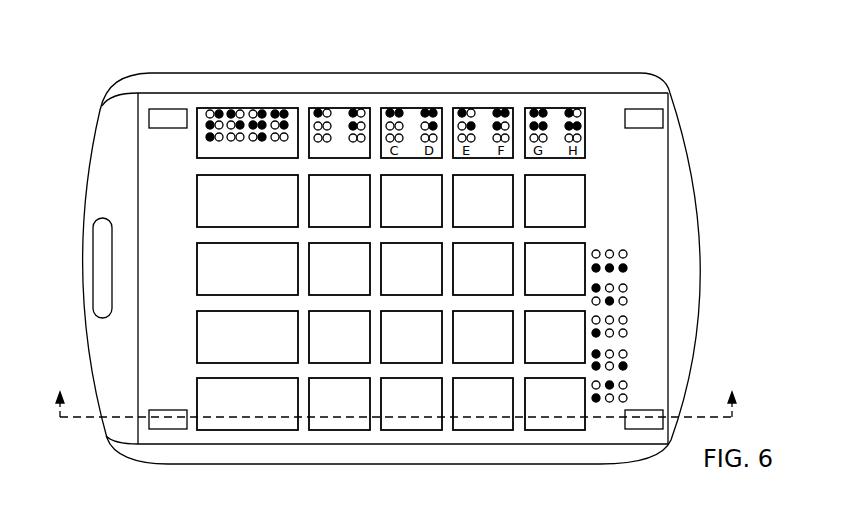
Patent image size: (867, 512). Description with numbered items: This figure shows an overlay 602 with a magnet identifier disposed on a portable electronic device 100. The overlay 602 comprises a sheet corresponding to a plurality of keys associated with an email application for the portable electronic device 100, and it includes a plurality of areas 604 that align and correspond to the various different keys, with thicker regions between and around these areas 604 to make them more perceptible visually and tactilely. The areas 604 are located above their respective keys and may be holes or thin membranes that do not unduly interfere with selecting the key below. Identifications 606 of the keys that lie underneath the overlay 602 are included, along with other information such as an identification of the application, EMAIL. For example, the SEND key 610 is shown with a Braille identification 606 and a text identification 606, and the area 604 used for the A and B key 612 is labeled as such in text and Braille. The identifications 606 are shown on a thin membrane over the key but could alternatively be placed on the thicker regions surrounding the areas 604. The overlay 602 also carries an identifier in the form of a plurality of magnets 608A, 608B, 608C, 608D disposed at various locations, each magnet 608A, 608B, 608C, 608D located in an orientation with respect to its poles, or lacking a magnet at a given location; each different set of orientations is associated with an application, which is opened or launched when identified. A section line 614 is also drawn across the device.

The portable electronic device 100 is at (80, 463).
The overlay 602 is at (455, 100).
The areas 604 is at (250, 421).
The identifications 606 is at (250, 117).
The magnet 608A is at (165, 109).
The magnet 608B is at (643, 110).
The magnet 608C is at (645, 430).
The magnet 608D is at (163, 430).
The SEND key 610 is at (297, 113).
The A and B key 612 is at (368, 113).
The section line 614 is at (690, 418).